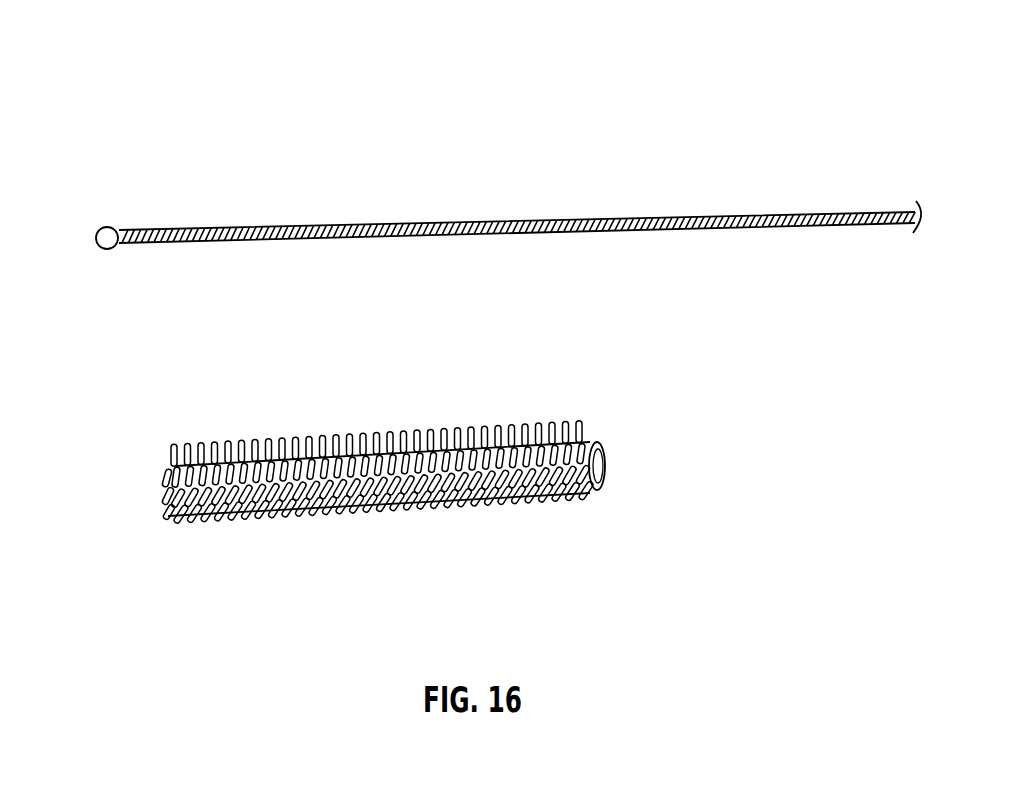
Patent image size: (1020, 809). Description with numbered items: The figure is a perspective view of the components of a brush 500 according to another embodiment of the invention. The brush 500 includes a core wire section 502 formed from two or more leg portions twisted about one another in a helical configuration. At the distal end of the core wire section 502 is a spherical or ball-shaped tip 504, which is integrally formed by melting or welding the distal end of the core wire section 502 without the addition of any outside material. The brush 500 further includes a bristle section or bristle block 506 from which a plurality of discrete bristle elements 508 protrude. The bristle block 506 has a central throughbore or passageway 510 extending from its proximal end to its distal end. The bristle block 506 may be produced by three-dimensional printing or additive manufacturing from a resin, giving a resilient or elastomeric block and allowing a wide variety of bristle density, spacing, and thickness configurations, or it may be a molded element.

The brush 500 is at (549, 95).
The core wire section 502 is at (642, 220).
The ball-shaped tip 504 is at (106, 229).
The bristle block 506 is at (403, 528).
The bristle elements 508 is at (232, 512).
The central throughbore 510 is at (160, 493).